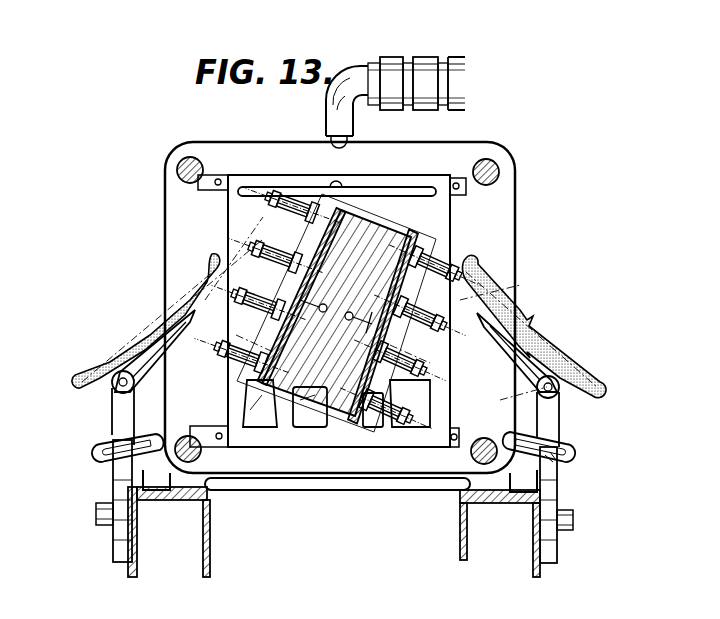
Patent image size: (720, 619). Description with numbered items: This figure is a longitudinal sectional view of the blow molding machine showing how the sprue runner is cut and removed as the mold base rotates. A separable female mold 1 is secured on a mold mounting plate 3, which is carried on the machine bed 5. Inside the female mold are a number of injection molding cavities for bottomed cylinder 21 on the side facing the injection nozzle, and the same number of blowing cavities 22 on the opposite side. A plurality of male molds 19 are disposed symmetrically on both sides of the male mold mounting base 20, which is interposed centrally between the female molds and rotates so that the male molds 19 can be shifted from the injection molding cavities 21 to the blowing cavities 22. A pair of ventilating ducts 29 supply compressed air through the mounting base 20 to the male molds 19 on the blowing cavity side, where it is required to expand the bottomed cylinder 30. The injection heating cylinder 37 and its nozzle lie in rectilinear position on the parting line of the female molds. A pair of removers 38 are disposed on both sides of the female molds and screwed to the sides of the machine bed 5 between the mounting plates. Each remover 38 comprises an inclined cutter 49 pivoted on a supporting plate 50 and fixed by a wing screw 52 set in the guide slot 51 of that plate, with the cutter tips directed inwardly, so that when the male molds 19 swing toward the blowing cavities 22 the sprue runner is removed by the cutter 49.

The separable female mold 1 is at (441, 213).
The mold mounting plate 3 is at (168, 215).
The machine bed 5 is at (540, 565).
The male molds 19 is at (290, 202).
The male mold mounting base 20 is at (315, 420).
The injection molding cavities for bottomed cylinder 21 is at (252, 204).
The blowing cavities 22 is at (257, 422).
The ventilating ducts 29 is at (483, 287).
The bottomed cylinder 30 is at (422, 420).
The injection heating cylinder 37 is at (421, 58).
The remover 38 is at (562, 412).
The inclined cutter 49 is at (533, 353).
The supporting plate 50 is at (550, 487).
The guide slot 51 is at (573, 450).
The wing screw 52 is at (555, 467).